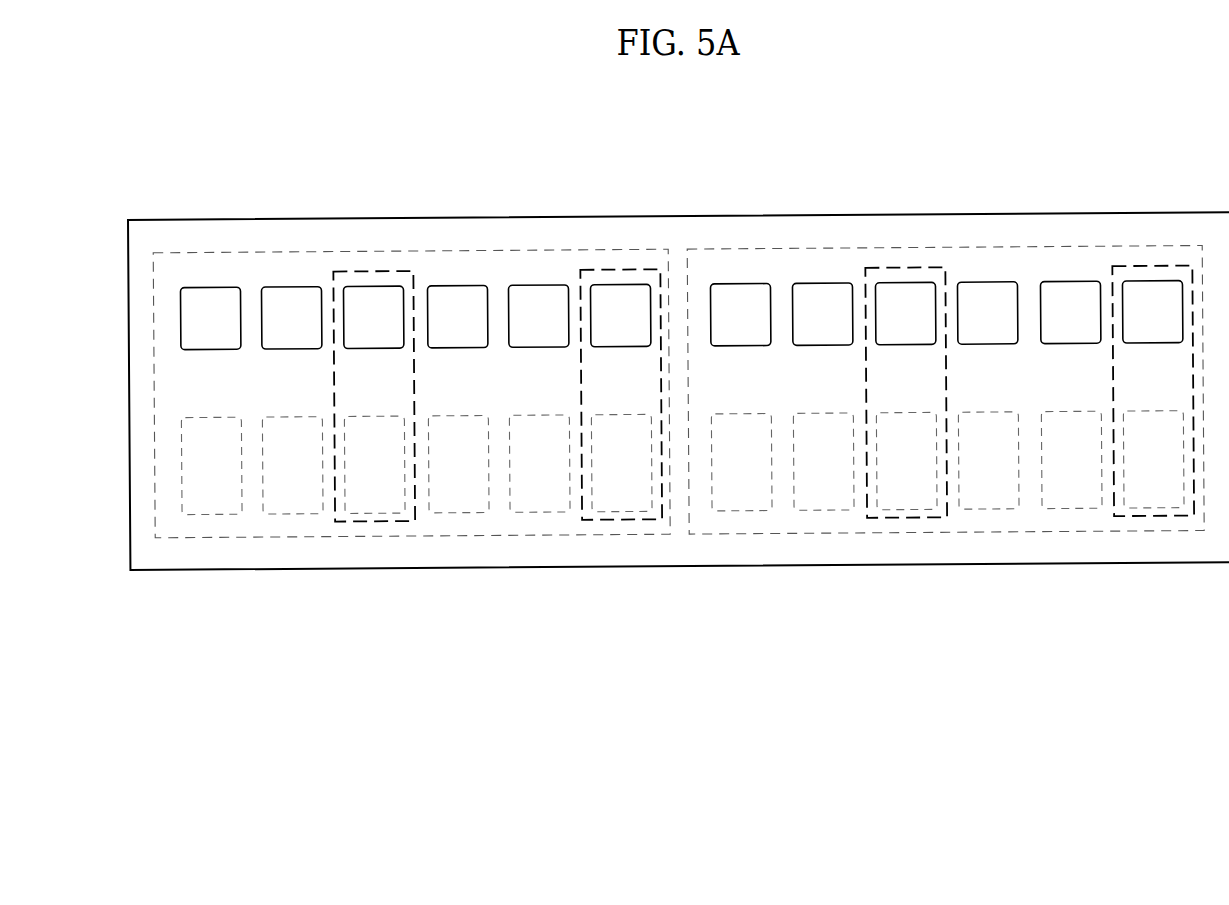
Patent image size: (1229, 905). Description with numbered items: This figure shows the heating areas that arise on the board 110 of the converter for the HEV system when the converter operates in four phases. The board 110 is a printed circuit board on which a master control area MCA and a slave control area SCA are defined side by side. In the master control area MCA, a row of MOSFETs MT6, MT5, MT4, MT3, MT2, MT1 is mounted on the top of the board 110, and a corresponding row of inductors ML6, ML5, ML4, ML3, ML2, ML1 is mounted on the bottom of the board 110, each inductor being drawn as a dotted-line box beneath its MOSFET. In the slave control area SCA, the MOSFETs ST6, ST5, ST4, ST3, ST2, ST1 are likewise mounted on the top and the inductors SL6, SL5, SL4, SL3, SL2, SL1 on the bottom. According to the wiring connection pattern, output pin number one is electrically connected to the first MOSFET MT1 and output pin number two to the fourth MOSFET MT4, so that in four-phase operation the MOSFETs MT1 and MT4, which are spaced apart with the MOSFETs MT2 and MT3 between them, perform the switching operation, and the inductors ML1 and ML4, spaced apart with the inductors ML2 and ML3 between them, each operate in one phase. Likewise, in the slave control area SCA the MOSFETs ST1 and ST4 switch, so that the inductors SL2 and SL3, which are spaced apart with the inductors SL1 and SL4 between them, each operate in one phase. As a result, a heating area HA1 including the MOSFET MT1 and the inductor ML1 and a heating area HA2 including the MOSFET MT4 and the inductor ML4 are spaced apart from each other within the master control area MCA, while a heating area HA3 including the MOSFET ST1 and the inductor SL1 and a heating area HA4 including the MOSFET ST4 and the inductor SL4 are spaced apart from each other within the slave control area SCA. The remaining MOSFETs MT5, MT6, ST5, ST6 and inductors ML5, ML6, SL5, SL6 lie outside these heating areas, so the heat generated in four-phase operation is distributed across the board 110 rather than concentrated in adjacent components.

The board 110 is at (1030, 217).
The master control area MCA is at (194, 252).
The slave control area SCA is at (725, 252).
The heating area HA1 is at (621, 273).
The heating area HA2 is at (375, 273).
The heating area HA3 is at (1153, 273).
The heating area HA4 is at (907, 273).
The first MOSFET MT1 is at (620, 315).
The MOSFET MT2 is at (538, 316).
The MOSFET MT3 is at (457, 316).
The fourth MOSFET MT4 is at (373, 317).
The MOSFET MT5 is at (291, 318).
The MOSFET MT6 is at (210, 318).
The inductor ML1 is at (621, 462).
The inductor ML2 is at (539, 463).
The inductor ML3 is at (458, 463).
The inductor ML4 is at (374, 464).
The inductor ML5 is at (292, 465).
The inductor ML6 is at (211, 465).
The MOSFET ST1 is at (1152, 312).
The MOSFET ST2 is at (1070, 312).
The MOSFET ST3 is at (987, 313).
The MOSFET ST4 is at (905, 313).
The MOSFET ST5 is at (822, 314).
The MOSFET ST6 is at (740, 315).
The inductor SL1 is at (1153, 459).
The inductor SL2 is at (1071, 459).
The inductor SL3 is at (988, 460).
The inductor SL4 is at (906, 460).
The inductor SL5 is at (823, 461).
The inductor SL6 is at (741, 462).